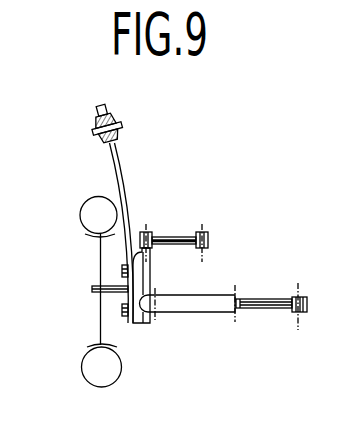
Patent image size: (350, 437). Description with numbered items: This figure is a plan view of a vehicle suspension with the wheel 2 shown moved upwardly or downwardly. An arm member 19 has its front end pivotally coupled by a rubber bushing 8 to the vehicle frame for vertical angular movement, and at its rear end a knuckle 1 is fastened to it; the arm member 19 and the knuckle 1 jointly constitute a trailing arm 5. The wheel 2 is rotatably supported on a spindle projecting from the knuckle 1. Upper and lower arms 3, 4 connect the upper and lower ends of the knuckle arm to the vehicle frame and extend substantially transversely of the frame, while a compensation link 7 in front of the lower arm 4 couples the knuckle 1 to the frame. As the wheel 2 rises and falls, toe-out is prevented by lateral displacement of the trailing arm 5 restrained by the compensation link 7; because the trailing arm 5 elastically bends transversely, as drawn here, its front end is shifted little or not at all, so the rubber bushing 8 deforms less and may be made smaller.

The knuckle 1 is at (141, 314).
The wheel 2 is at (90, 218).
The upper arm 3 is at (202, 304).
The lower arm 4 is at (253, 299).
The trailing arm 5 is at (142, 213).
The compensation link 7 is at (178, 236).
The rubber bushing 8 is at (115, 123).
The arm member 19 is at (124, 180).